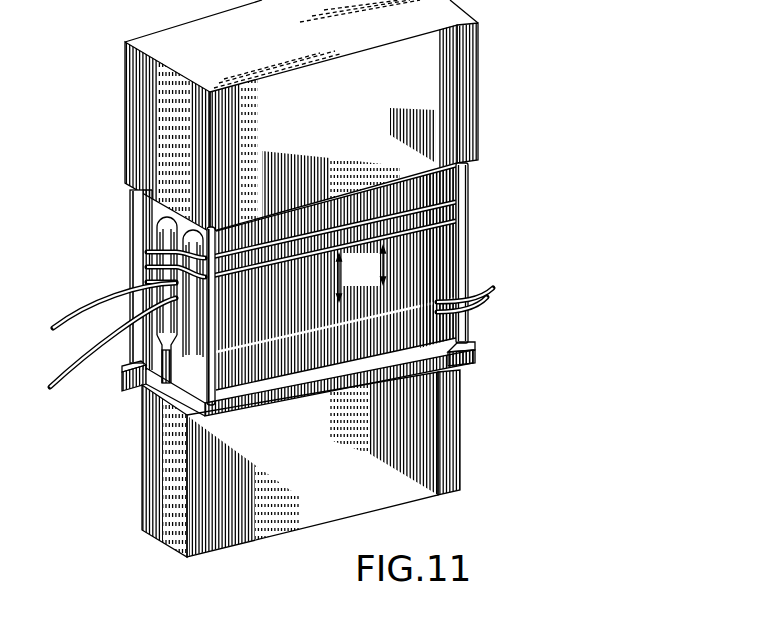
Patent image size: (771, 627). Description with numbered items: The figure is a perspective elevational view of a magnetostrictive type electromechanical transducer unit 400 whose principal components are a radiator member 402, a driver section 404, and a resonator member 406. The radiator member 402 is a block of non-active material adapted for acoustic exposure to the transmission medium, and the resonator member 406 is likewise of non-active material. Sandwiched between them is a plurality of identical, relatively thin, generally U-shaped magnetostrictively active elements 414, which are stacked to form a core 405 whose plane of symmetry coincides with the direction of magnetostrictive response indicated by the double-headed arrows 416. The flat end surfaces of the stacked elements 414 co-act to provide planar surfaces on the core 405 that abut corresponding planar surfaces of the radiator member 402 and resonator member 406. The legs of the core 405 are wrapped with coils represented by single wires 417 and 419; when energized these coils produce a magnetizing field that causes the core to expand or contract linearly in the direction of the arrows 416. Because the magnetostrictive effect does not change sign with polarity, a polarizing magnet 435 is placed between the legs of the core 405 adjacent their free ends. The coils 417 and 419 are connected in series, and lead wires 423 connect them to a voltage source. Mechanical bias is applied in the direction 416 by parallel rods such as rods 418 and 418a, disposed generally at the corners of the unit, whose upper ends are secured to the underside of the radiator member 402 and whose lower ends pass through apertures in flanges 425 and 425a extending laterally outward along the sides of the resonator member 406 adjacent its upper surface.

The magnetostrictive type electromechanical transducer unit 400 is at (322, 313).
The radiator member 402 is at (478, 127).
The driver section 404 is at (322, 313).
The core 405 is at (445, 250).
The resonator member 406 is at (467, 410).
The magnetostrictively active elements 414 is at (155, 240).
The double-headed arrows 416 is at (361, 273).
The coil wire 417 is at (452, 196).
The rod 418 is at (190, 403).
The rod 418a is at (137, 200).
The coil wire 419 is at (455, 213).
The lead wires 423 is at (100, 303).
The flange 425 is at (458, 370).
The flange 425a is at (123, 372).
The polarizing magnet 435 is at (158, 380).